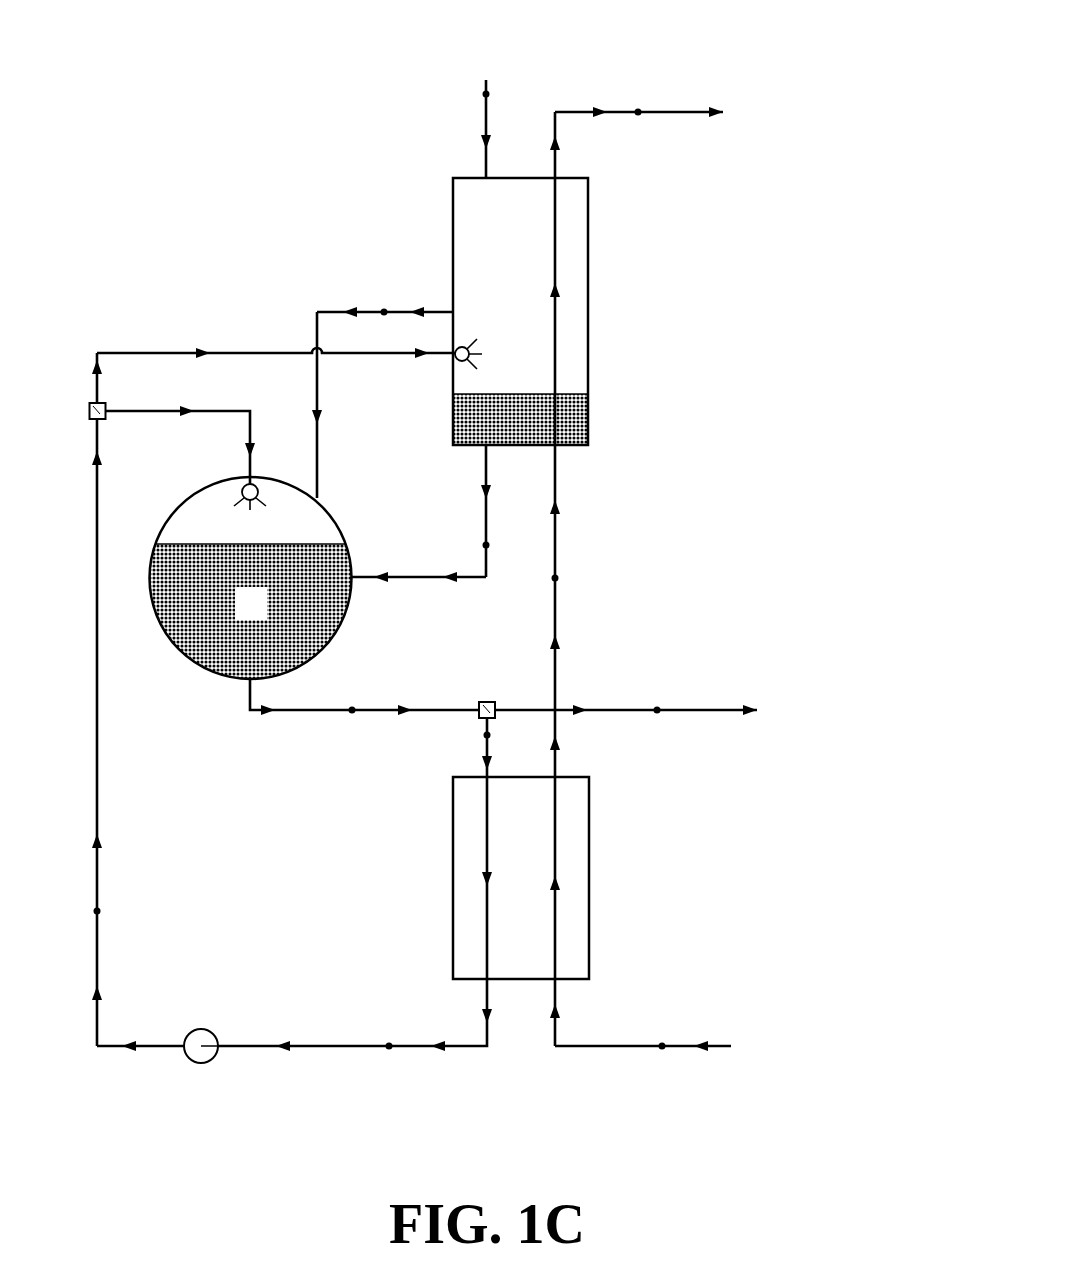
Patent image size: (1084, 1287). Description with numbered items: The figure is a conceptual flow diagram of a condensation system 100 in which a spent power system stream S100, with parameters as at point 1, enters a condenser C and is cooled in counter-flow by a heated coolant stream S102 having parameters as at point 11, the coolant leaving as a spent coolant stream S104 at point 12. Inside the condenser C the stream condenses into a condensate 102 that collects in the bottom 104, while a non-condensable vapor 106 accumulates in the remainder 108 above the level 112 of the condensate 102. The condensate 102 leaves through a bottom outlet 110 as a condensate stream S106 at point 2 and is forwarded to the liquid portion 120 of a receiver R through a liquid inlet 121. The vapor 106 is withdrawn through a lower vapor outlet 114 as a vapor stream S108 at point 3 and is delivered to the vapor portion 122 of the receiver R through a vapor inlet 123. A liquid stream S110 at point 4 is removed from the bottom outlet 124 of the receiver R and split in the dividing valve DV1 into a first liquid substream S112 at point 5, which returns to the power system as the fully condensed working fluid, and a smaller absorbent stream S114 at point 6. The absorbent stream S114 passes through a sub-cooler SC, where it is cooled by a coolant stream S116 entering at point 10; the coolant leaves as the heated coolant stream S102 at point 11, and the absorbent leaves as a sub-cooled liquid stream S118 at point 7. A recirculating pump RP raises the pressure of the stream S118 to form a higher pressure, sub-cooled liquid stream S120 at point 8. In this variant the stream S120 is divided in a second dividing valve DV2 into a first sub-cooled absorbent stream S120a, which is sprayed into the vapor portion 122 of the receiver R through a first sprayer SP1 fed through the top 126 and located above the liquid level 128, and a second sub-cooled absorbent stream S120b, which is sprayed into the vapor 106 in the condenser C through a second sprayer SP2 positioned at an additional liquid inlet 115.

The condensation system 100 is at (866, 293).
The condensate 102 is at (570, 422).
The bottom of the condenser 104 is at (602, 420).
The non-condensable vapor 106 is at (570, 268).
The remainder of the condenser 108 is at (602, 328).
The bottom outlet of the condenser 110 is at (478, 447).
The level of the liquid condensate 112 is at (570, 393).
The lower vapor outlet 114 is at (448, 311).
The additional liquid inlet 115 is at (455, 360).
The liquid portion of the receiver 120 is at (158, 642).
The liquid inlet 121 is at (352, 570).
The vapor portion of the receiver 122 is at (158, 513).
The vapor inlet 123 is at (318, 497).
The bottom outlet of the receiver 124 is at (243, 678).
The top of the receiver 126 is at (258, 482).
The level of liquid 128 is at (173, 544).
The spent power system stream S100 is at (490, 122).
The heated coolant stream S102 is at (557, 540).
The spent coolant stream S104 is at (672, 110).
The condensate stream S106 is at (420, 578).
The vapor stream S108 is at (315, 312).
The liquid stream S110 is at (438, 710).
The first liquid substream S112 is at (690, 710).
The absorbent stream S114 is at (480, 747).
The coolant stream S116 is at (627, 1046).
The sub-cooled liquid stream S118 is at (320, 1046).
The higher pressure sub-cooled liquid stream S120 is at (97, 757).
The first sub-cooled absorbent stream S120a is at (130, 411).
The second sub-cooled absorbent stream S120b is at (130, 352).
The dividing valve DV1 is at (478, 698).
The second dividing valve DV2 is at (92, 403).
The first sprayer SP1 is at (241, 489).
The second sprayer SP2 is at (455, 348).
The recirculating pump RP is at (201, 1031).
The condenser C is at (520, 311).
The receiver R is at (251, 578).
The sub-cooler SC is at (521, 878).
The point 1 is at (476, 95).
The point 2 is at (476, 545).
The point 3 is at (384, 299).
The point 4 is at (352, 726).
The point 5 is at (657, 726).
The point 6 is at (496, 737).
The point 7 is at (389, 1062).
The point 8 is at (107, 911).
The point 10 is at (662, 1062).
The point 11 is at (571, 578).
The point 12 is at (637, 99).